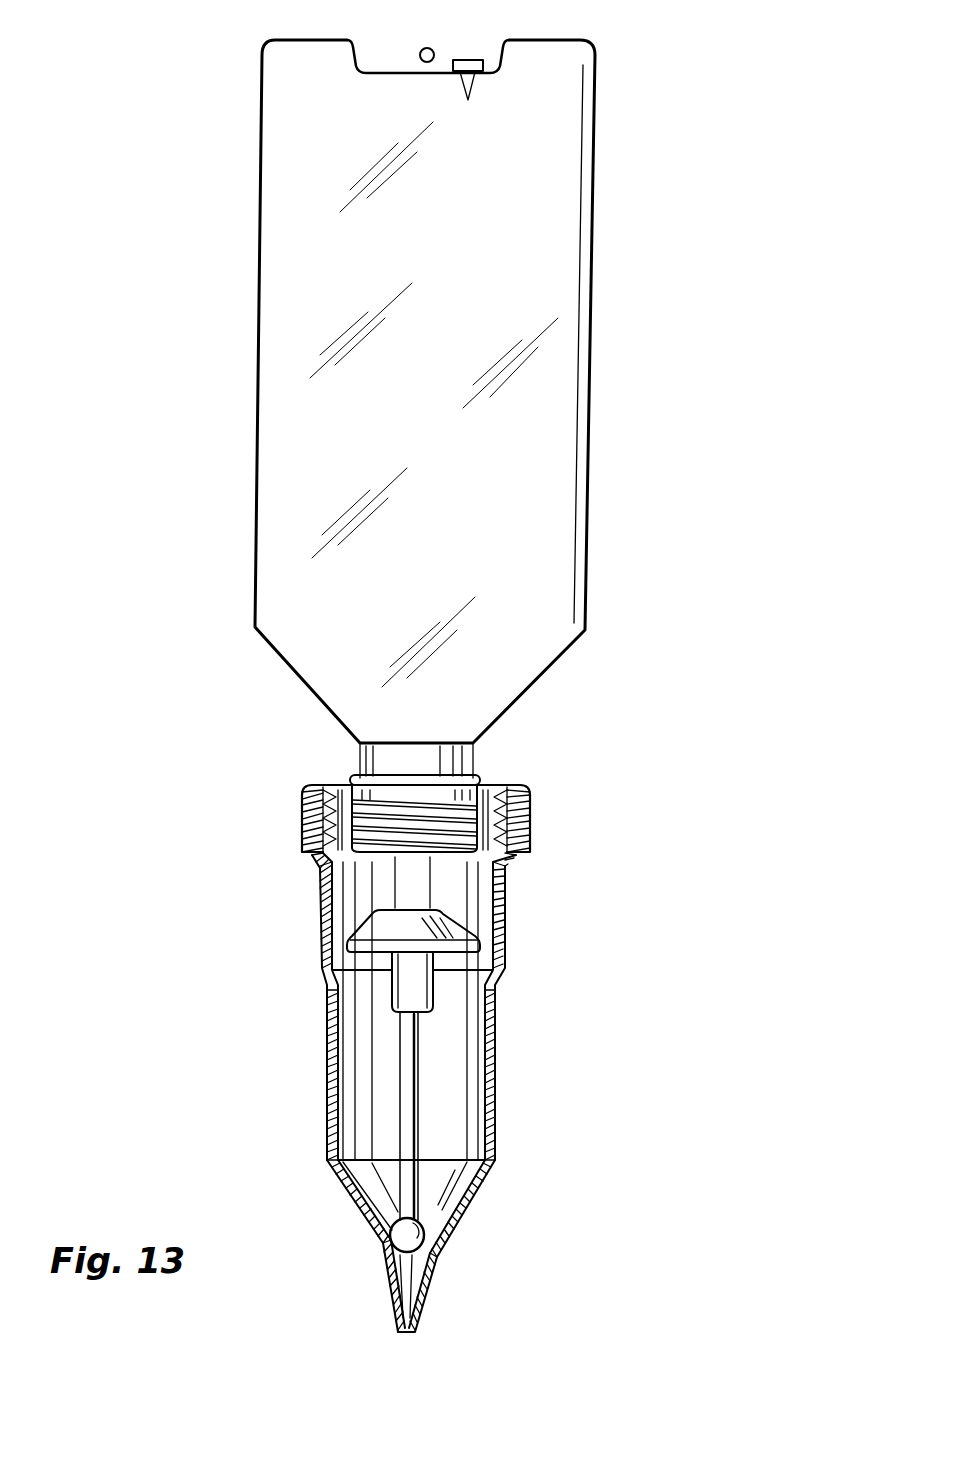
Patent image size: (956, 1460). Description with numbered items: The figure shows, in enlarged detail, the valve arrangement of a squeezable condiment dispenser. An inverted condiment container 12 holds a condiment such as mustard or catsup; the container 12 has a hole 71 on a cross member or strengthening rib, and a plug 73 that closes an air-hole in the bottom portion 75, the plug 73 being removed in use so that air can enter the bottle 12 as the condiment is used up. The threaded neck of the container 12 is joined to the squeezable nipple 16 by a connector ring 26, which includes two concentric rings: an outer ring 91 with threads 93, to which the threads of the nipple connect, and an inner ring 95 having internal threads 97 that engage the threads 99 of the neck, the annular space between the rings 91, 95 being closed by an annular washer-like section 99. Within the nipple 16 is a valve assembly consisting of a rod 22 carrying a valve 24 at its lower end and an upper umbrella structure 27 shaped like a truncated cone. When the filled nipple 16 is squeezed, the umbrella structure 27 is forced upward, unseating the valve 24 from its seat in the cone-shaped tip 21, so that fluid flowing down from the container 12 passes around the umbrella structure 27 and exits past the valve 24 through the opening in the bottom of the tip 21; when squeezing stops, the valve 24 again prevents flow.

The condiment container 12 is at (630, 305).
The squeezable nipple 16 is at (405, 1006).
The tip 21 is at (443, 1278).
The rod 22 is at (413, 1090).
The valve 24 is at (403, 1233).
The connector ring 26 is at (407, 778).
The umbrella structure 27 is at (480, 947).
The hole 71 is at (421, 52).
The plug 73 is at (480, 72).
The bottom portion 75 is at (446, 62).
The outer ring 91 is at (302, 788).
The threads 93 is at (323, 818).
The inner ring 95 is at (510, 867).
The internal threads 97 is at (452, 846).
The threads / annular washer-like section 99 is at (500, 797).